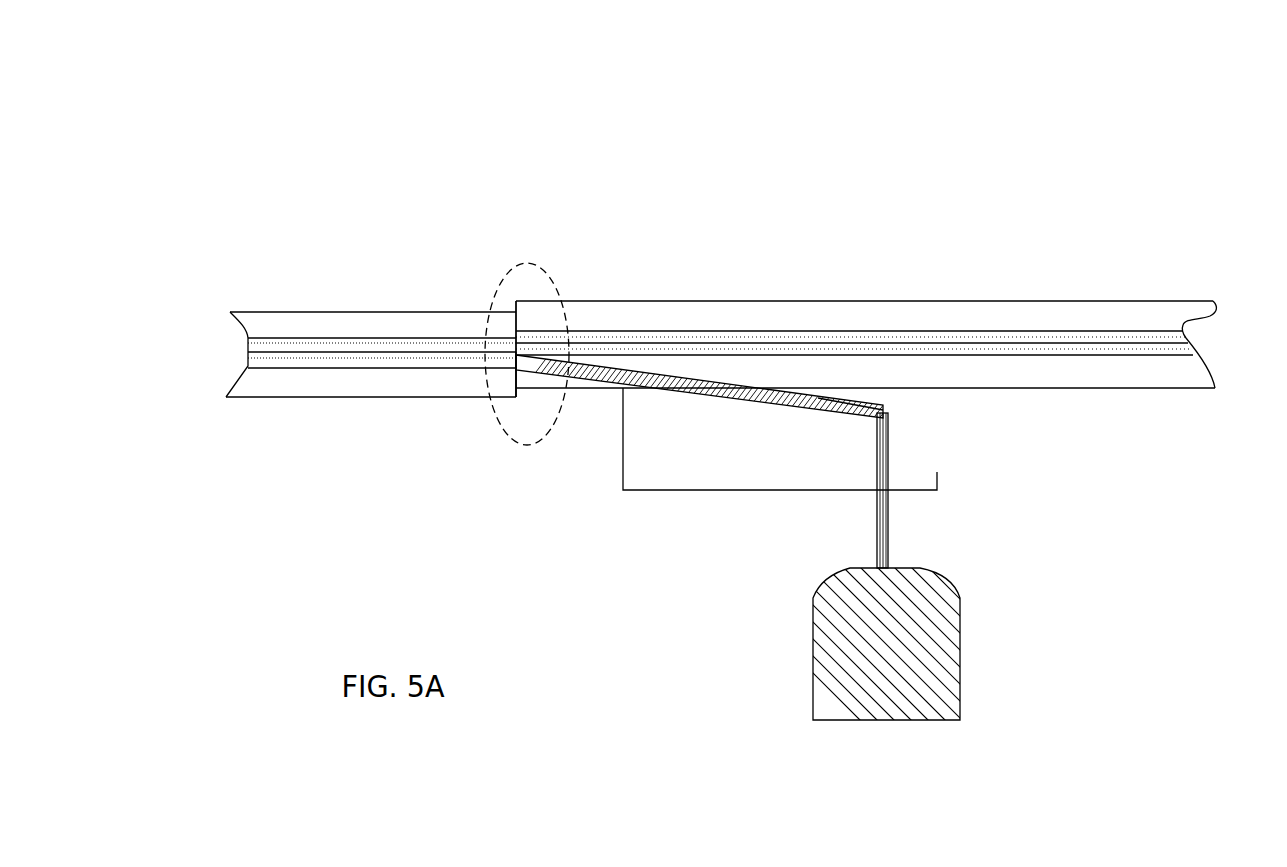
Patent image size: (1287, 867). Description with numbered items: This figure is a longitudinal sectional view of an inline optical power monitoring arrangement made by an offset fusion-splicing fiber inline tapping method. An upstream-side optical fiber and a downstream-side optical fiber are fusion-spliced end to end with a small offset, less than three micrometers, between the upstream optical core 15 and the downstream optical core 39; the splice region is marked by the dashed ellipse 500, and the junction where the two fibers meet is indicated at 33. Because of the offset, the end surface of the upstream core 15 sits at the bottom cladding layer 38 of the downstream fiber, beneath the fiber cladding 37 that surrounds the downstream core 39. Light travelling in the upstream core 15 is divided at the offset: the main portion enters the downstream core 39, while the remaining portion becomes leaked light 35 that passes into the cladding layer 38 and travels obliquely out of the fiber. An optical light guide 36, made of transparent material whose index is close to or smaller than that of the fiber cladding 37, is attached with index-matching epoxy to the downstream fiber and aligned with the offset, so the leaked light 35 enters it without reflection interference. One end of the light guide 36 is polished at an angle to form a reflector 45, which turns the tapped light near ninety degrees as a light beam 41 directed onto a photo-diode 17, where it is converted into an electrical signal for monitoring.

The optical core 15 is at (292, 352).
The photo-diode 17 is at (923, 667).
The shaft junction 33 is at (512, 292).
The leaked light 35 is at (620, 370).
The optical light guide 36 is at (733, 447).
The fiber cladding 37 is at (1125, 325).
The cladding layer 38 is at (528, 380).
The optical core 39 is at (1145, 345).
The light beam 41 is at (818, 398).
The reflector 45 is at (863, 388).
The detail region 500 is at (525, 263).